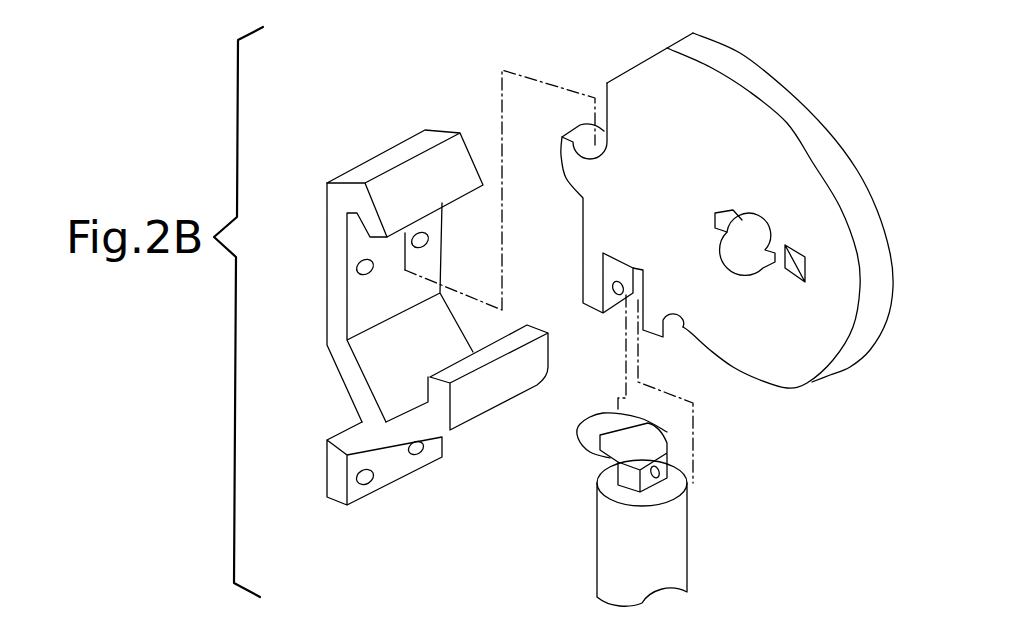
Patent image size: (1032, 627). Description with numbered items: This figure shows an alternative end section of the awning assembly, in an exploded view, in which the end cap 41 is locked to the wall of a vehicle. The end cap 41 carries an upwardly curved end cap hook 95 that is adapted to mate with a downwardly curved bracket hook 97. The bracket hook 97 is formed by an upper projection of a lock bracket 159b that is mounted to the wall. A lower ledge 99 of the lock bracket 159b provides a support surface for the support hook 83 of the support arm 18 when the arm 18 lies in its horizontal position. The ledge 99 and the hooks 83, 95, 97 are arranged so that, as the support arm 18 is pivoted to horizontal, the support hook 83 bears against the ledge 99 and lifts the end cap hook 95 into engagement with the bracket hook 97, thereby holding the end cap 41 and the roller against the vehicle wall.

The lock bracket 159b is at (378, 160).
The bracket hook 97 is at (468, 147).
The lower ledge 99 is at (418, 405).
The end cap hook 95 is at (592, 123).
The end cap 41 is at (725, 203).
The support hook 83 is at (668, 445).
The support arm 18 is at (683, 532).